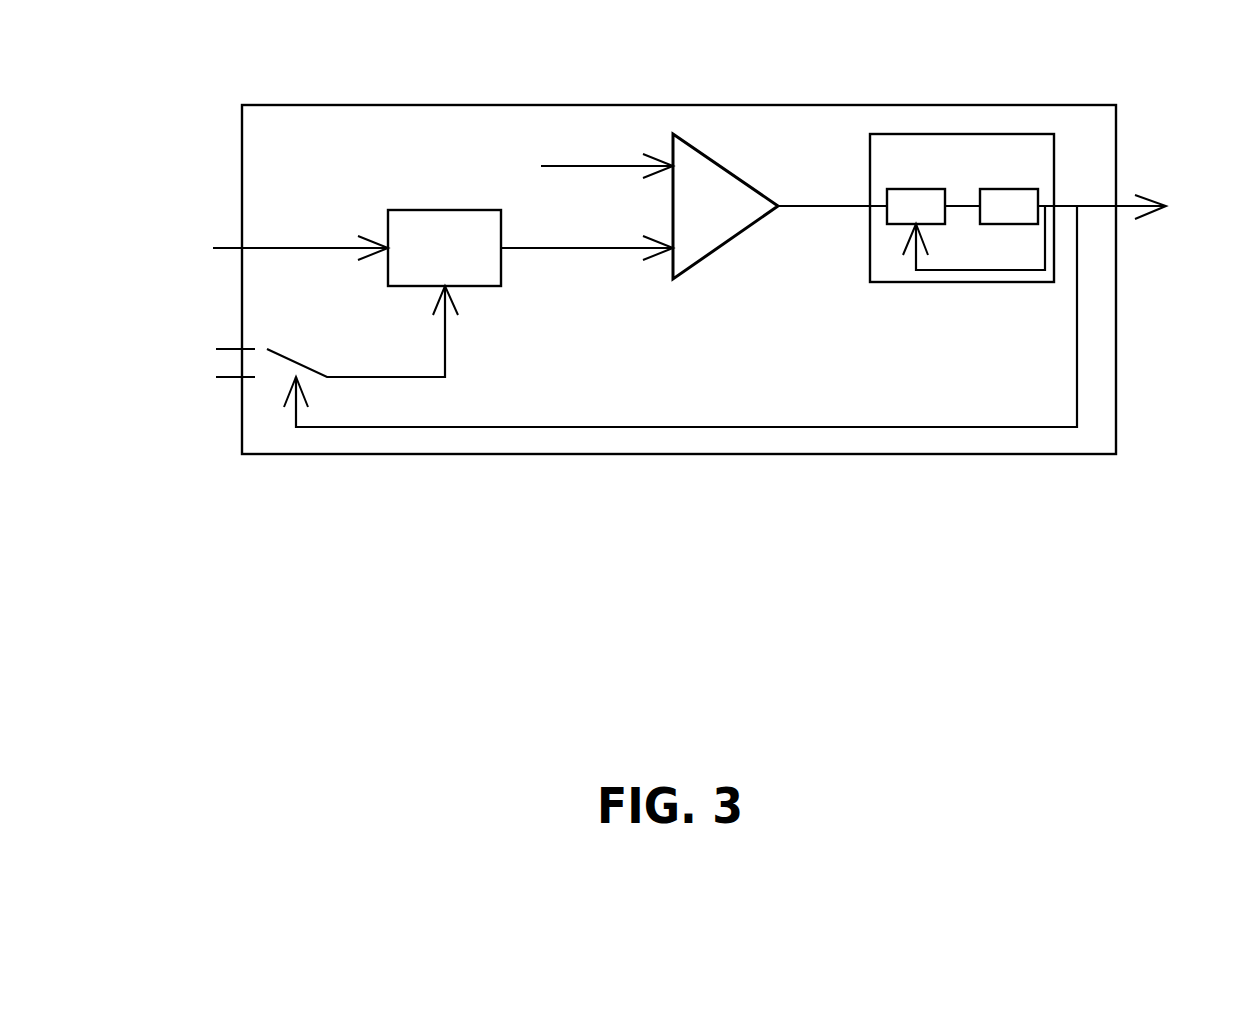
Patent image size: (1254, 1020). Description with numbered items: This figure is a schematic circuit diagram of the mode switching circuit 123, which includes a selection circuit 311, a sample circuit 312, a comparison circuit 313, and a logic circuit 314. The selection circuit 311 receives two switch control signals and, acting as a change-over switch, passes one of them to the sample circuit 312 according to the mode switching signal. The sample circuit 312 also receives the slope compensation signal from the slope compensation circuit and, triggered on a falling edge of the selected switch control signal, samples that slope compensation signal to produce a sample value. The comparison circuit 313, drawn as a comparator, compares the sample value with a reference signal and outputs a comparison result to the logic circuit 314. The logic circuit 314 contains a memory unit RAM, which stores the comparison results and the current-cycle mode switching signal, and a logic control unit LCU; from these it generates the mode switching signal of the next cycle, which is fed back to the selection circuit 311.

The mode switching circuit 123 is at (669, 370).
The selection circuit 311 is at (310, 368).
The sample circuit 312 is at (452, 210).
The comparison circuit 313 is at (732, 174).
The logic circuit 314 is at (969, 161).
The memory unit RAM is at (917, 189).
The logic control unit LCU is at (1010, 189).